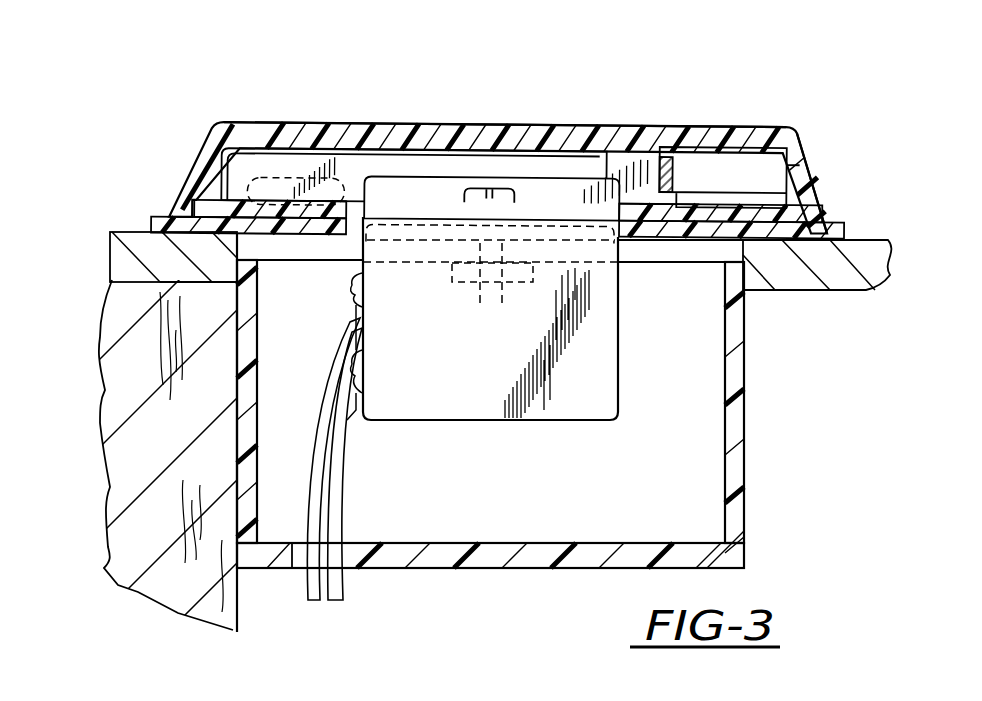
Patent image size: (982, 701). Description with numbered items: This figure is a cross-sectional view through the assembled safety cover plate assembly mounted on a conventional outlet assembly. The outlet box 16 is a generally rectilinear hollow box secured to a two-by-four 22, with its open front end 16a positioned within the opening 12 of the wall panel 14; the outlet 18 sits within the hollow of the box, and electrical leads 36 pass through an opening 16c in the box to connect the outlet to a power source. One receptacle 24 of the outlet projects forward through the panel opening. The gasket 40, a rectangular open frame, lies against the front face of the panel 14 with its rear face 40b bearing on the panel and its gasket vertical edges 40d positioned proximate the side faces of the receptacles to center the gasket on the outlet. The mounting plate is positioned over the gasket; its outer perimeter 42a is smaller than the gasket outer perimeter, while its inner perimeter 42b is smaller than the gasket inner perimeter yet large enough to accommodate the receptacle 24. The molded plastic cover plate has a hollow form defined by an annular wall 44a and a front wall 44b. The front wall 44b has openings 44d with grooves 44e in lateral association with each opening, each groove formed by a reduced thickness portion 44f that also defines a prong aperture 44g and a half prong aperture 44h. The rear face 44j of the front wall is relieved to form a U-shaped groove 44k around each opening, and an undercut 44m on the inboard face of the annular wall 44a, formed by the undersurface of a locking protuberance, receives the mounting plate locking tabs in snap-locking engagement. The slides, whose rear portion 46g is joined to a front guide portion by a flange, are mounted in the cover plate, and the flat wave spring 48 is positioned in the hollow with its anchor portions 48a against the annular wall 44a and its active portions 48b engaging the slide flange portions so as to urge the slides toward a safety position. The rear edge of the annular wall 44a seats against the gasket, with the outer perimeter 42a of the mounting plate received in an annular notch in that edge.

The opening 12 is at (262, 250).
The wall panel 14 is at (124, 216).
The outlet box 16 is at (230, 451).
The open front end 16a is at (233, 357).
The opening 16c is at (352, 572).
The outlet 18 is at (476, 434).
The 2×4 22 is at (206, 593).
The receptacle 24 is at (585, 440).
The leads 36 is at (330, 392).
The gasket 40 is at (185, 243).
The rear face 40b is at (215, 283).
The gasket vertical edges 40d is at (618, 225).
The outer perimeter 42a is at (180, 207).
The inner perimeter 42b is at (397, 220).
The annular wall 44a is at (822, 148).
The front wall 44b is at (232, 118).
The openings 44d is at (635, 120).
The grooves 44e is at (353, 118).
The reduced thickness portion 44f is at (447, 118).
The prong aperture 44g is at (443, 140).
The half prong aperture 44h is at (570, 122).
The rear face 44j is at (404, 222).
The U-shaped groove 44k is at (730, 127).
The undercut 44m is at (338, 121).
The rear portion 46g is at (692, 220).
The spring 48 is at (760, 148).
The anchor portions 48a is at (793, 167).
The active portions 48b is at (668, 150).